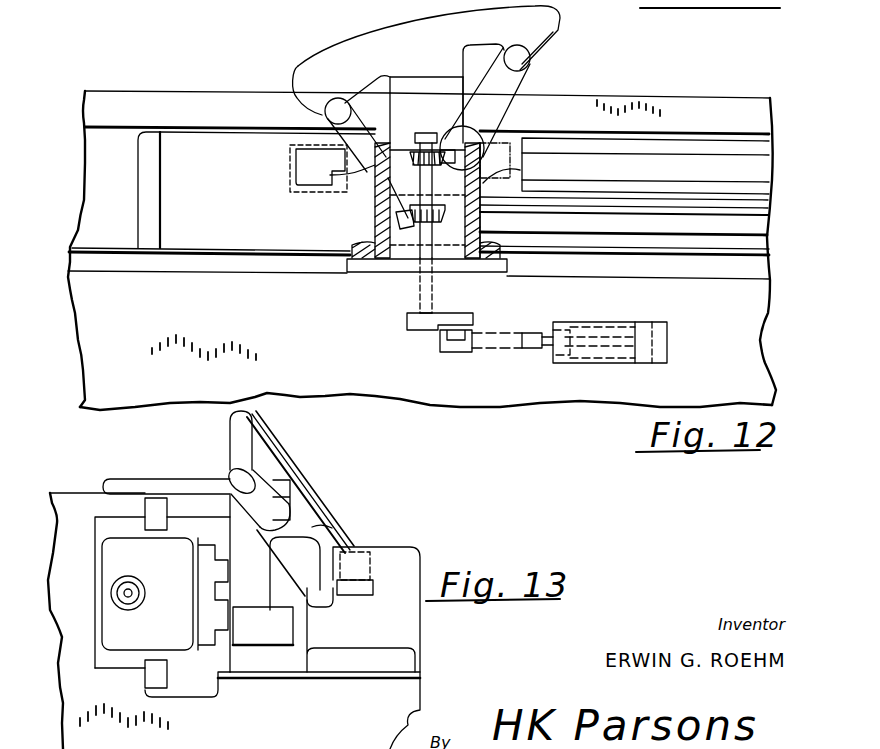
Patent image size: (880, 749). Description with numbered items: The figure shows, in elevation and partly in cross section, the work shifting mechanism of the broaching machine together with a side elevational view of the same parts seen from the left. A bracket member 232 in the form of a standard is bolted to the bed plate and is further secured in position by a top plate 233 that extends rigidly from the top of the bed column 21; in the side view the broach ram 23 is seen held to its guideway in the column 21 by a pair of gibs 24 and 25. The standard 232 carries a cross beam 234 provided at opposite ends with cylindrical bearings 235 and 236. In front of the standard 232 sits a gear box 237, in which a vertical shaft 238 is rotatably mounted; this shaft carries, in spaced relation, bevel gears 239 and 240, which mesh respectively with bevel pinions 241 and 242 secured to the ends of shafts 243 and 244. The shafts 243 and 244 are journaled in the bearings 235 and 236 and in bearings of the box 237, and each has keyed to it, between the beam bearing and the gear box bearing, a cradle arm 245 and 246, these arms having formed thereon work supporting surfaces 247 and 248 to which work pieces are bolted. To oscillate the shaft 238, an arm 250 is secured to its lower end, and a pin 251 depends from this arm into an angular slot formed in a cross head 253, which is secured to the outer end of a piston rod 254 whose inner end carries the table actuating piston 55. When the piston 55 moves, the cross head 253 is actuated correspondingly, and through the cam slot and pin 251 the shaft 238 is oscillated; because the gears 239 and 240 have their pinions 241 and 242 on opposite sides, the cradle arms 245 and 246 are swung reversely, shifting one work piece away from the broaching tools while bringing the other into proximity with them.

In FIG. 12, the broach ram 23 is at (188, 146).
In FIG. 13, the broach ram 23 is at (108, 530).
In FIG. 12, the cross beam 234 is at (450, 2).
In FIG. 13, the cross beam 234 is at (232, 446).
In FIG. 12, the cradle arm 245 is at (326, 120).
In FIG. 13, the cradle arm 245 is at (302, 590).
In FIG. 12, the cradle arm 246 is at (512, 72).
In FIG. 12, the shaft 244 is at (504, 138).
In FIG. 12, the work supporting surface 247 is at (310, 186).
In FIG. 13, the work supporting surface 247 is at (350, 598).
In FIG. 12, the bevel gear 239 is at (374, 190).
In FIG. 12, the shaft 243 is at (390, 205).
In FIG. 12, the gear box 237 is at (376, 234).
In FIG. 13, the gear box 237 is at (406, 639).
In FIG. 12, the bevel pinion 242 is at (375, 262).
In FIG. 12, the shaft 238 is at (420, 262).
In FIG. 12, the bevel gear 240 is at (481, 214).
In FIG. 12, the bevel pinion 241 is at (510, 176).
In FIG. 12, the work supporting surface 248 is at (645, 166).
In FIG. 12, the bracket member 232 is at (508, 269).
In FIG. 13, the bracket member 232 is at (298, 660).
In FIG. 12, the arm 250 is at (440, 318).
In FIG. 12, the pin 251 is at (466, 342).
In FIG. 12, the cross head 253 is at (505, 346).
In FIG. 12, the piston rod 254 is at (620, 315).
In FIG. 12, the piston 55 is at (642, 330).
In FIG. 13, the cylindrical bearing 236 is at (266, 438).
In FIG. 13, the top plate 233 is at (198, 470).
In FIG. 13, the gib 24 is at (162, 511).
In FIG. 13, the cylindrical bearing 235 is at (248, 545).
In FIG. 13, the gib 25 is at (158, 681).
In FIG. 13, the column 21 is at (70, 709).